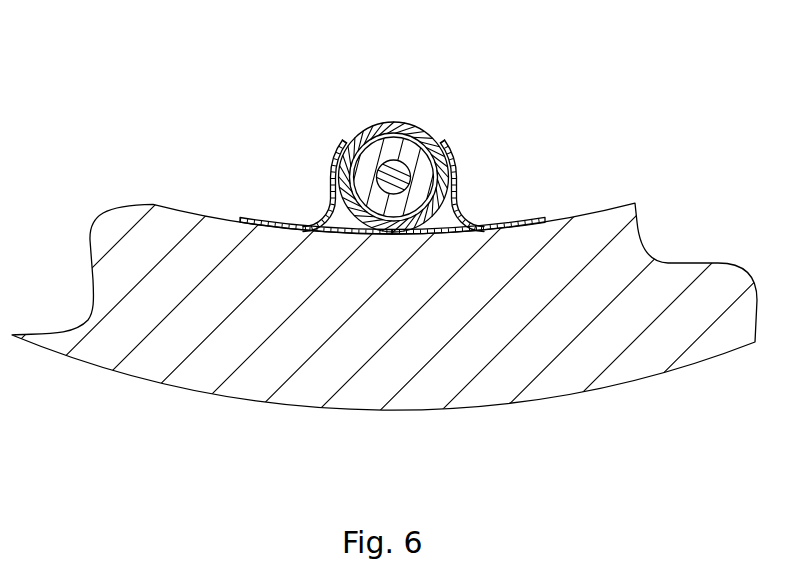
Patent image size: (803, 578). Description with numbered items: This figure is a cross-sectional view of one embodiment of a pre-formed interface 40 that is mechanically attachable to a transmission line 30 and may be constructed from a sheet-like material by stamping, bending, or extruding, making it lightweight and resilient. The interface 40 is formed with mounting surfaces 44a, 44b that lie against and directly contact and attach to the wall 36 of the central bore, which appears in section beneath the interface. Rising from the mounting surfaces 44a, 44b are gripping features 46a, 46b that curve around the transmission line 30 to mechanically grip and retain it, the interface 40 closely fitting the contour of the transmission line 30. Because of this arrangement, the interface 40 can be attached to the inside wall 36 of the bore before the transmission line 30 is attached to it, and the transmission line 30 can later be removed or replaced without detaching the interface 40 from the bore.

The transmission line 30 is at (394, 88).
The wall of the central bore 36 is at (373, 388).
The pre-formed interface 40 is at (402, 167).
The mounting surface 44a is at (268, 221).
The mounting surface 44b is at (520, 220).
The gripping feature 46a is at (342, 140).
The gripping feature 46b is at (445, 140).